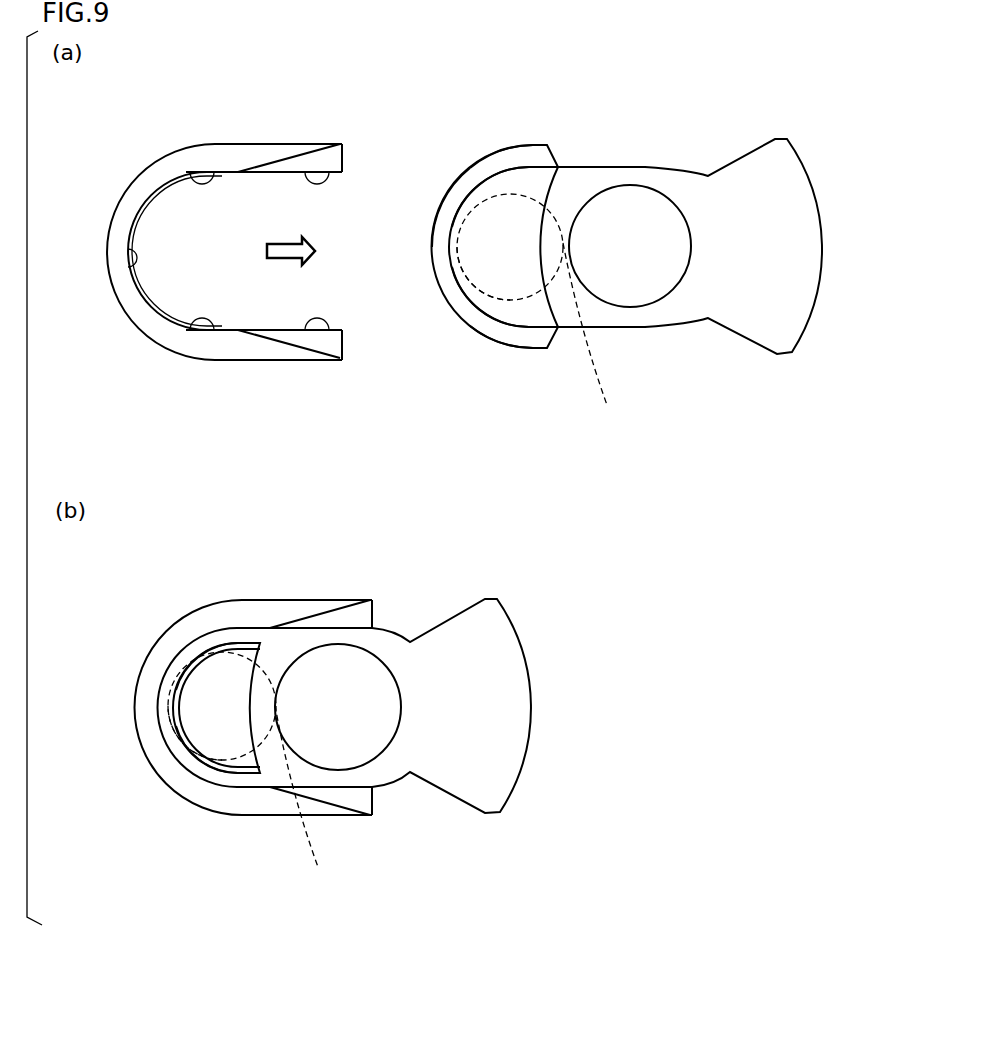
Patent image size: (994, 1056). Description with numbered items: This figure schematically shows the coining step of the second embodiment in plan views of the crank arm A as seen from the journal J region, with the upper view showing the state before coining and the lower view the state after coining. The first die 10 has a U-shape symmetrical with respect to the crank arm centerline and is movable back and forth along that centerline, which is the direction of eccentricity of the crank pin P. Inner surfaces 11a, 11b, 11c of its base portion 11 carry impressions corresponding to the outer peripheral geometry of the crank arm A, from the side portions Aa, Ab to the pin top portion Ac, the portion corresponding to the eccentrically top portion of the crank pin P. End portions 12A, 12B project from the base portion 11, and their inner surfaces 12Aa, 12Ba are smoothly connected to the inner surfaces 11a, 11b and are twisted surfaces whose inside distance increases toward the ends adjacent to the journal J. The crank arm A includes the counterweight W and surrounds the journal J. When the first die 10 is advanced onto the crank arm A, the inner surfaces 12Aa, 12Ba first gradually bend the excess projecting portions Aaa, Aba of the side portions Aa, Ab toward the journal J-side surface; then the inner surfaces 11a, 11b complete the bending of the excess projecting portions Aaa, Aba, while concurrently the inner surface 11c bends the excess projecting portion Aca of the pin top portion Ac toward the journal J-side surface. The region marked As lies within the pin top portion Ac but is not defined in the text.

The first die 10 is at (234, 478).
The base portion 11 is at (128, 187).
The inner surface of base portion 11a is at (185, 172).
The inner surface of base portion 11b is at (187, 333).
The inner surface of base portion 11c is at (137, 263).
The end portion 12A is at (303, 142).
The inner surface of end portion 12Aa is at (308, 166).
The end portion 12B is at (303, 360).
The inner surface of end portion 12Ba is at (308, 333).
The crank arm A is at (365, 478).
The side portion of crank arm Aa is at (537, 172).
The excess projecting portion Aaa is at (524, 143).
The side portion of crank arm Ab is at (535, 323).
The excess projecting portion Aba is at (525, 352).
The pin top portion Ac is at (453, 255).
The excess projecting portion Aca is at (438, 237).
The inner space / center of curved portion As is at (510, 275).
The crank pin P is at (447, 567).
The journal J is at (645, 307).
The counterweight W is at (561, 492).